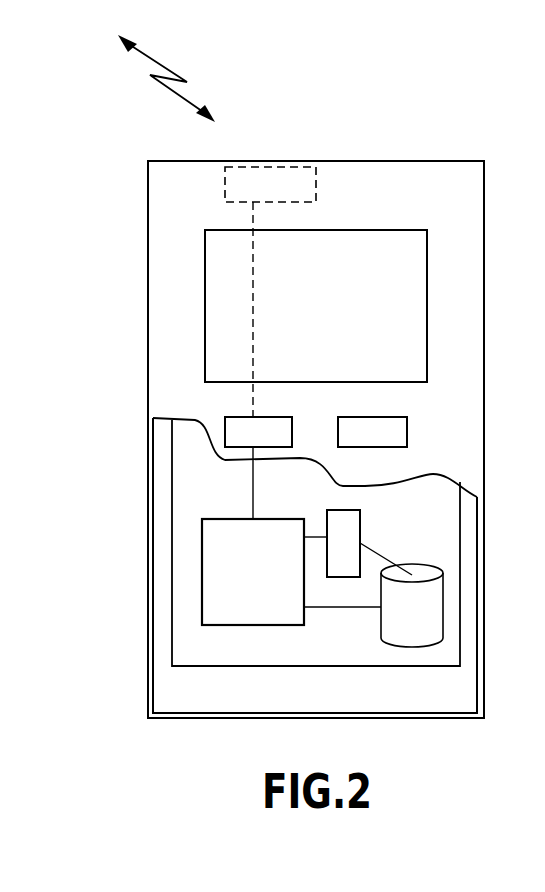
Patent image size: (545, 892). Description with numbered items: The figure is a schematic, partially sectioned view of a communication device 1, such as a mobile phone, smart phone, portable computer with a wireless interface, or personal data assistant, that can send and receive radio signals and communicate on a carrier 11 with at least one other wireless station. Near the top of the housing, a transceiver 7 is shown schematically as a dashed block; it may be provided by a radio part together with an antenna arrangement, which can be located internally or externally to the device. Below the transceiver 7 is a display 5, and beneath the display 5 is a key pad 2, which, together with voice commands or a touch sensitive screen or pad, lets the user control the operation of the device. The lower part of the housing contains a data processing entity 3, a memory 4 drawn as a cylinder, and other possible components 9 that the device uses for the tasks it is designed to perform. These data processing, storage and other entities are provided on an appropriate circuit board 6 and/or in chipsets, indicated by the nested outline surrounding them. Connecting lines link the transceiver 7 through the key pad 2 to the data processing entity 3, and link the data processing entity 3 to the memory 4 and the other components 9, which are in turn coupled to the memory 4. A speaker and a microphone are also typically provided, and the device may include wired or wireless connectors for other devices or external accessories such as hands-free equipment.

The communication device 1 is at (148, 190).
The key pad 2 is at (225, 430).
The data processing entity 3 is at (202, 555).
The memory 4 is at (430, 610).
The display 5 is at (212, 277).
The circuit board 6 is at (202, 645).
The transceiver 7 is at (317, 182).
The other components 9 is at (428, 521).
The carrier 11 is at (156, 61).